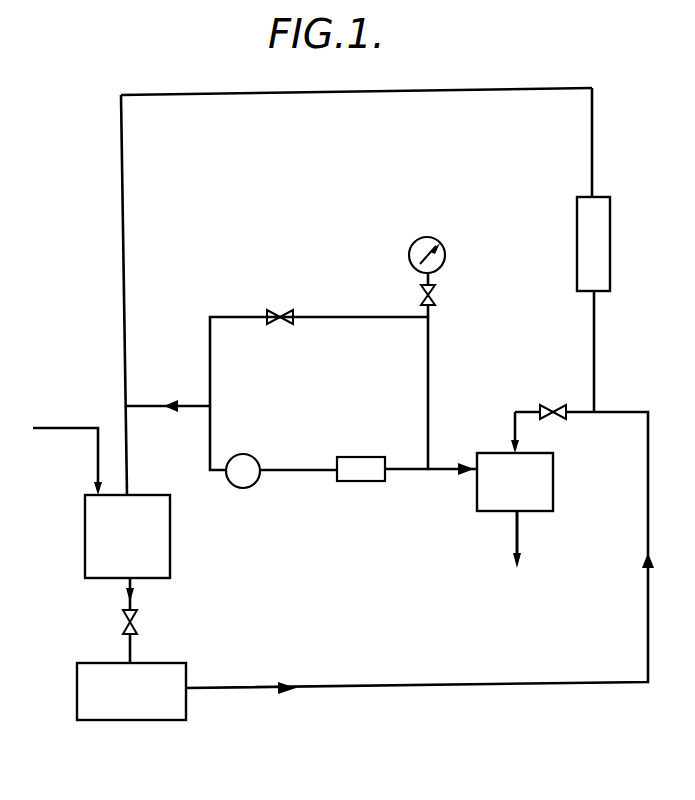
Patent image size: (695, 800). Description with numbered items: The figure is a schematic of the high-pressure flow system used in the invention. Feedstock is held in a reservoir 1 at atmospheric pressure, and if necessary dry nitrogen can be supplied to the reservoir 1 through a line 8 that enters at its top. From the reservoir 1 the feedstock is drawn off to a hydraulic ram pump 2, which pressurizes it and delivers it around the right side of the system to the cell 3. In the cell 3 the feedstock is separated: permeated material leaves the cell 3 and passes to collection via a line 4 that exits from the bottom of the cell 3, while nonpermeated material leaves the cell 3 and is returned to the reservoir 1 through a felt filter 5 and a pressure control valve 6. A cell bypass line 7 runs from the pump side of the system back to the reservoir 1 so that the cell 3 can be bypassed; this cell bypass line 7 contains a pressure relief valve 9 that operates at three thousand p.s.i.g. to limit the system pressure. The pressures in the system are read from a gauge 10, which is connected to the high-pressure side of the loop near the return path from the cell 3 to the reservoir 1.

The reservoir 1 is at (95, 556).
The hydraulic ram pump 2 is at (178, 680).
The cell 3 is at (542, 493).
The line 4 is at (515, 540).
The felt filter 5 is at (358, 472).
The pressure control valve 6 is at (240, 473).
The cell bypass line 7 is at (125, 270).
The line 8 is at (66, 431).
The pressure relief valve 9 is at (588, 262).
The gauge 10 is at (408, 257).